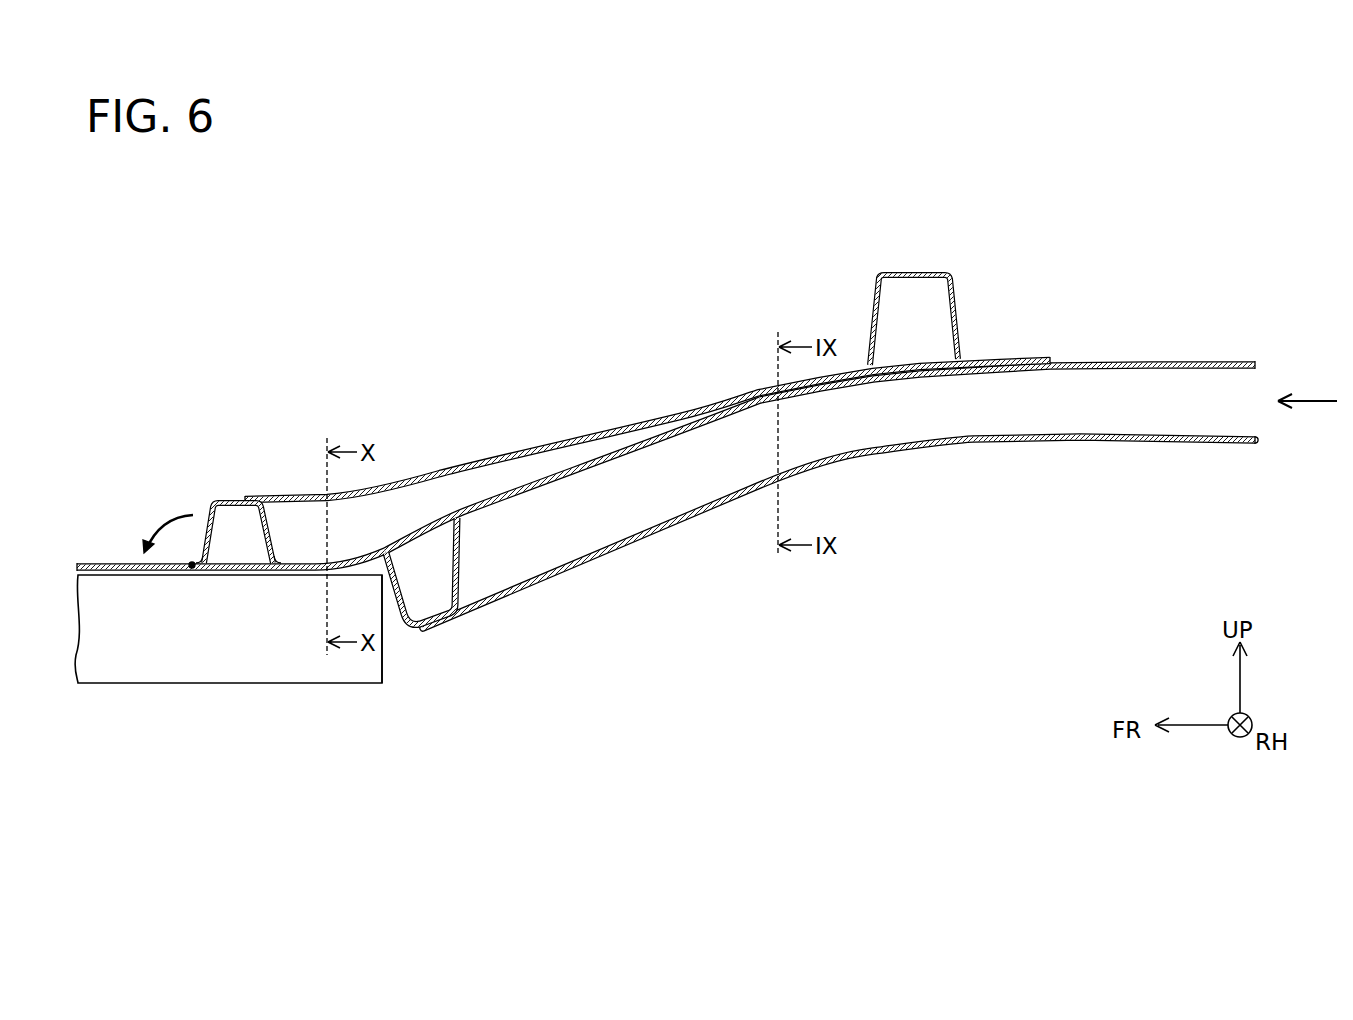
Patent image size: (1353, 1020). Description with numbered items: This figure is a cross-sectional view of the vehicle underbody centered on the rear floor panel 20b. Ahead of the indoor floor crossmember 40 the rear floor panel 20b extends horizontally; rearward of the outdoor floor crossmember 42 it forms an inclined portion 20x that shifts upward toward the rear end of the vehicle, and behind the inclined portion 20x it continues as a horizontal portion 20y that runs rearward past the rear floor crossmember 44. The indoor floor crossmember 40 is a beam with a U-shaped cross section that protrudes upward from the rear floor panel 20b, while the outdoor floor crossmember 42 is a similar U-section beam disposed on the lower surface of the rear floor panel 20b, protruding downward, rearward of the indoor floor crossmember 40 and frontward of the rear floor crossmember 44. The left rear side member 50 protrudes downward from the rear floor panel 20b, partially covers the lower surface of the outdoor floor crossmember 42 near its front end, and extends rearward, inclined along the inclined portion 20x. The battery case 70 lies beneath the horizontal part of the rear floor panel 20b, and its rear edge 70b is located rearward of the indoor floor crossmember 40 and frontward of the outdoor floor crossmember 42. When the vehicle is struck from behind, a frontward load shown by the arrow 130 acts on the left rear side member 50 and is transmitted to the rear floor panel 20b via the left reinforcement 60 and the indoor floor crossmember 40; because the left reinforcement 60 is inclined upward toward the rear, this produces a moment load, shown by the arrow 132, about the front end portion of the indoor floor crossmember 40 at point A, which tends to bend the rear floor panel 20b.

The rear floor panel 20b is at (120, 563).
The inclined portion 20x is at (673, 433).
The horizontal portion 20y is at (1037, 370).
The left reinforcement 60 is at (440, 470).
The left rear side member 50 is at (562, 572).
The outdoor floor crossmember 42 is at (395, 606).
The indoor floor crossmember 40 is at (233, 502).
The rear floor crossmember 44 is at (913, 272).
The battery case 70 is at (253, 668).
The rear edge 70b is at (390, 672).
The point A is at (192, 562).
The arrow 132 is at (167, 517).
The arrow 130 is at (1317, 403).